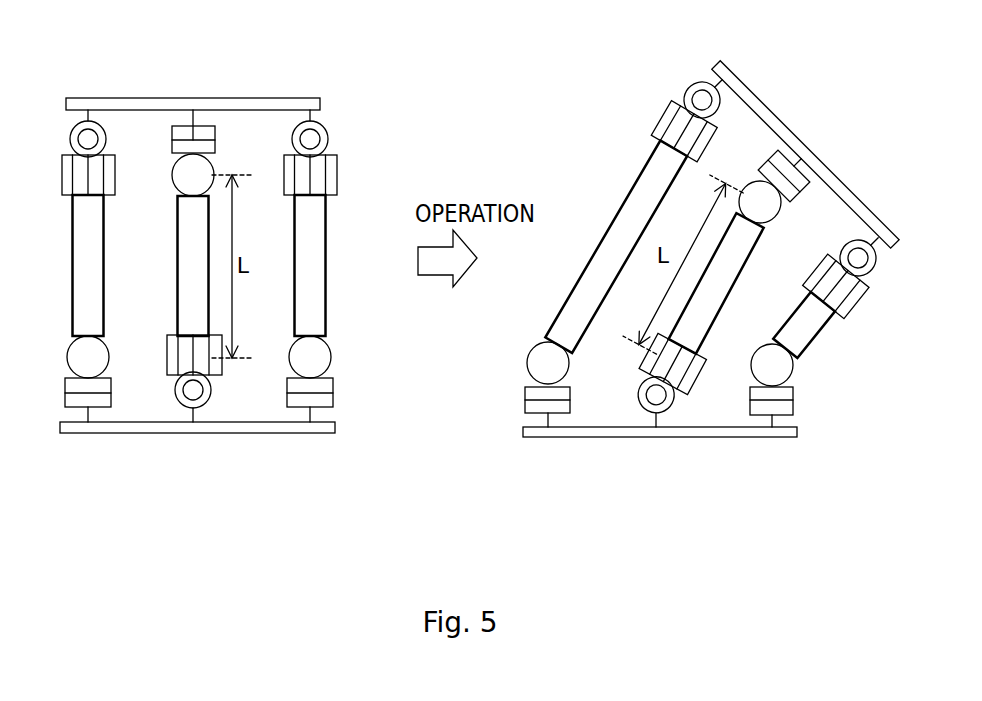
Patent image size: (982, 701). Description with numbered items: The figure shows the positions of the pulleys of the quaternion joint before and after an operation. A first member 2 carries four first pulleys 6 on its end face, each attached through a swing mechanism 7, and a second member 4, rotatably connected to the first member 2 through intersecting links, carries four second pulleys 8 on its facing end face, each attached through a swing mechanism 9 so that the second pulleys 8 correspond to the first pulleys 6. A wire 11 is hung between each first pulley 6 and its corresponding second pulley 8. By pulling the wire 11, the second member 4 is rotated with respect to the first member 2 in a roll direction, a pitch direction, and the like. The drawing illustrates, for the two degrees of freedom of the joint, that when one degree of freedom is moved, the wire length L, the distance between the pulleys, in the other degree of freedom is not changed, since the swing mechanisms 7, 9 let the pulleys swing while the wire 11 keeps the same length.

The first member 2 is at (195, 425).
The second member 4 is at (165, 105).
The first pulley 6 is at (88, 353).
The swing mechanism 7 is at (90, 388).
The second pulley 8 is at (68, 182).
The swing mechanism 9 is at (72, 138).
The wire 11 is at (103, 237).